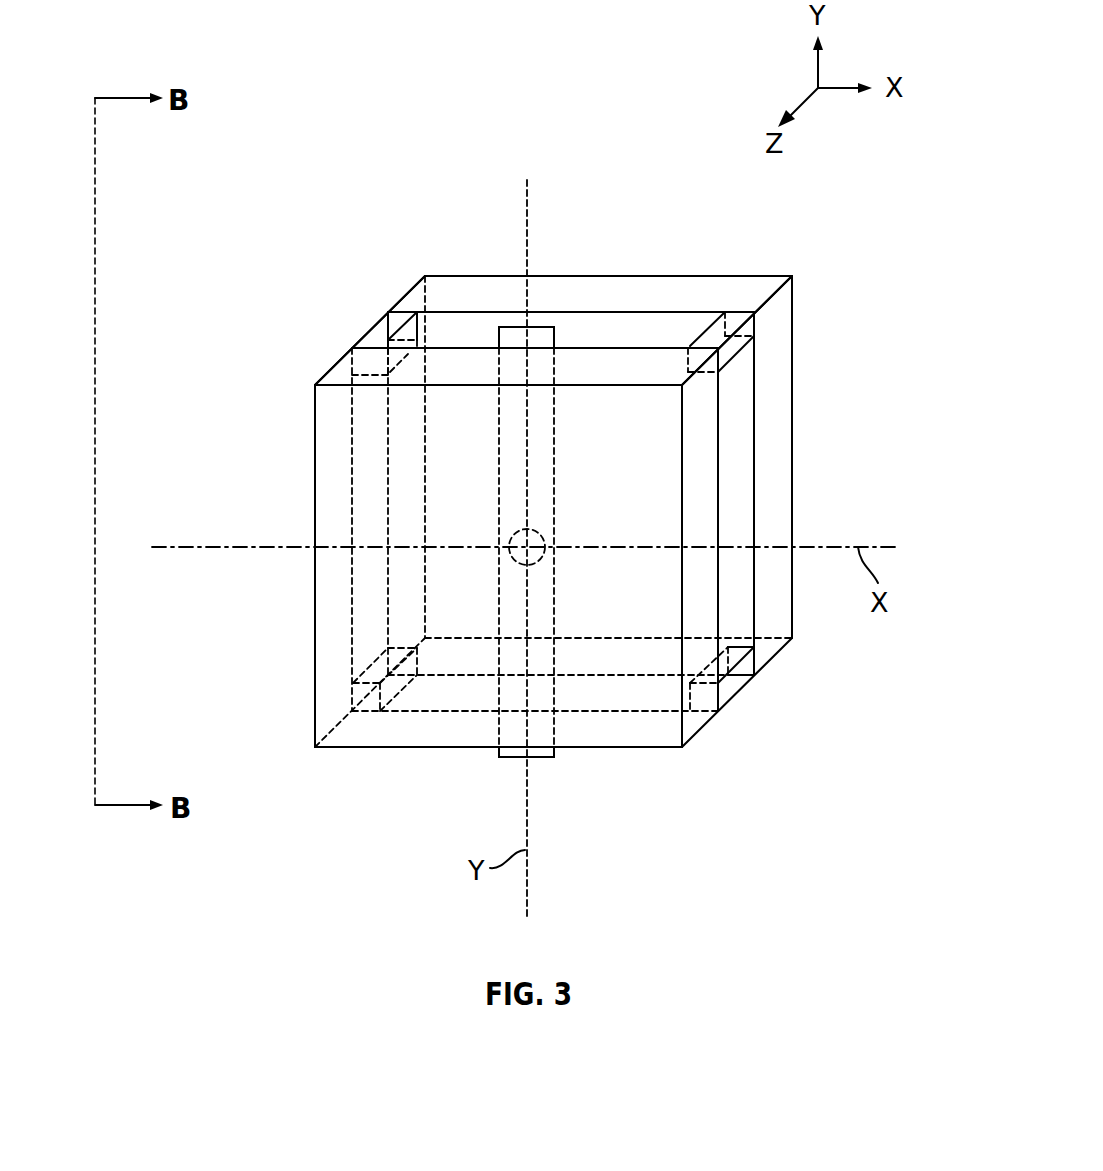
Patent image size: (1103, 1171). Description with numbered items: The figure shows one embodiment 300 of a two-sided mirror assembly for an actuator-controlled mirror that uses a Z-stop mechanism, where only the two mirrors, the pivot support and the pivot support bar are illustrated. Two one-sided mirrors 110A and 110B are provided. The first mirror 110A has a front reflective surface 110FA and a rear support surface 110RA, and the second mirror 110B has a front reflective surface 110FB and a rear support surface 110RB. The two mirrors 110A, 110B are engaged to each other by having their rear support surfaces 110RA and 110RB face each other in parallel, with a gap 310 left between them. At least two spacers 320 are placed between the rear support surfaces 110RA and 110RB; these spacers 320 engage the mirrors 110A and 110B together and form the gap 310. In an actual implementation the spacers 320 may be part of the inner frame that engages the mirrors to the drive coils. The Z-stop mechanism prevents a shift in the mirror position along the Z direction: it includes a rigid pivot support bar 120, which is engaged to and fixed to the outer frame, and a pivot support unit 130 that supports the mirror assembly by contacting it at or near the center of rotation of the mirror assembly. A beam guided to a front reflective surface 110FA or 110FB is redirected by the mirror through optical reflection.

The two-sided mirror assembly 300 is at (370, 125).
The one-sided mirror 110A is at (330, 367).
The one-sided mirror 110B is at (408, 292).
The rear support surface 110RA is at (483, 348).
The rear support surface 110RB is at (656, 310).
The front reflective surface 110FA is at (420, 748).
The front reflective surface 110FB is at (745, 287).
The gap 310 is at (579, 328).
The pivot support bar 120 is at (498, 737).
The pivot support unit 130 is at (553, 540).
The spacers 320 is at (375, 335).